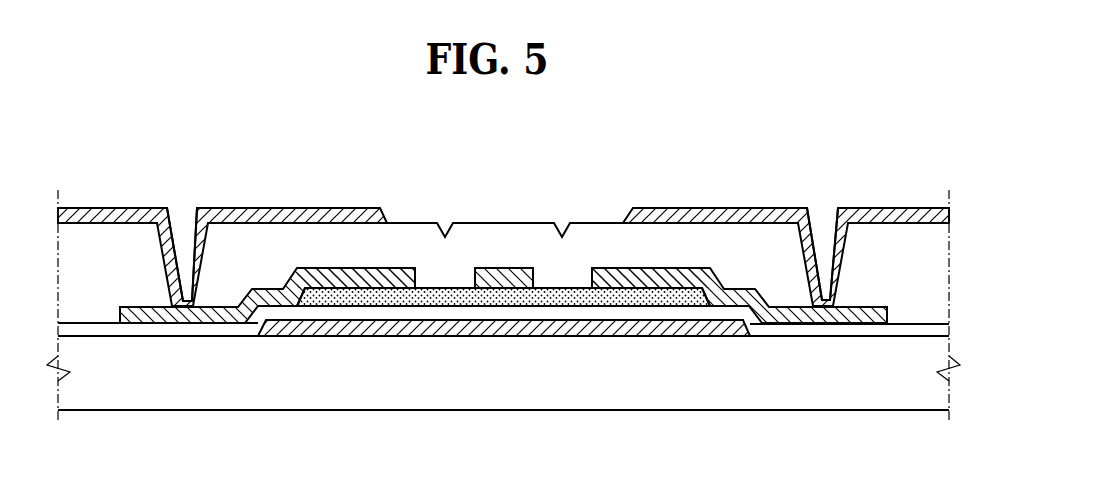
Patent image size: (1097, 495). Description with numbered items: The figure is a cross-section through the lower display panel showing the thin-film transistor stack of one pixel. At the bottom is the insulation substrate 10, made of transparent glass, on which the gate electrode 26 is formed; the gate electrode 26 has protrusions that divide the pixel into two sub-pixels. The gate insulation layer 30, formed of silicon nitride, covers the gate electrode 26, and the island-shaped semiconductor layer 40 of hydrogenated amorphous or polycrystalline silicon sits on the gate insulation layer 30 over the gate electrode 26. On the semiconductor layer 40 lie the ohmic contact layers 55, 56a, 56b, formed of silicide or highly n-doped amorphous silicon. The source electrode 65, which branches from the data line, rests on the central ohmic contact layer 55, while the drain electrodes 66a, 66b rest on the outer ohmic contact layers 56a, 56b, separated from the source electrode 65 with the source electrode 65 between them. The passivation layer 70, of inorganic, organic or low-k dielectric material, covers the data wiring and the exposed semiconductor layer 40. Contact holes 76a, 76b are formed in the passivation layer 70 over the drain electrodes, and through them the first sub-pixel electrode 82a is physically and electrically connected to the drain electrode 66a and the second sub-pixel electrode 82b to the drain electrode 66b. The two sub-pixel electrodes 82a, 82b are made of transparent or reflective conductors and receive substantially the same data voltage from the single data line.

The insulation substrate 10 is at (768, 400).
The gate electrode 26 is at (553, 325).
The gate insulation layer 30 is at (610, 317).
The semiconductor layer 40 is at (442, 302).
The ohmic contact layer 55 is at (507, 292).
The ohmic contact layer 56a is at (675, 288).
The ohmic contact layer 56b is at (352, 290).
The source electrode 65 is at (503, 267).
The drain electrode 66a is at (597, 267).
The drain electrode 66b is at (392, 267).
The passivation layer 70 is at (461, 233).
The contact hole 76a is at (826, 221).
The contact hole 76b is at (182, 221).
The first sub-pixel electrode 82a is at (743, 216).
The second sub-pixel electrode 82b is at (297, 218).